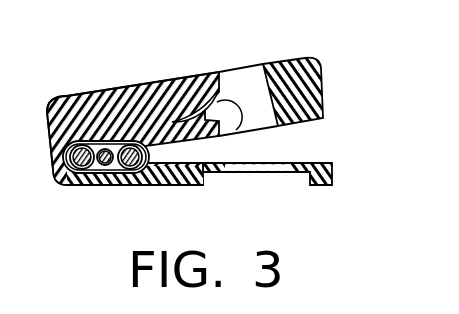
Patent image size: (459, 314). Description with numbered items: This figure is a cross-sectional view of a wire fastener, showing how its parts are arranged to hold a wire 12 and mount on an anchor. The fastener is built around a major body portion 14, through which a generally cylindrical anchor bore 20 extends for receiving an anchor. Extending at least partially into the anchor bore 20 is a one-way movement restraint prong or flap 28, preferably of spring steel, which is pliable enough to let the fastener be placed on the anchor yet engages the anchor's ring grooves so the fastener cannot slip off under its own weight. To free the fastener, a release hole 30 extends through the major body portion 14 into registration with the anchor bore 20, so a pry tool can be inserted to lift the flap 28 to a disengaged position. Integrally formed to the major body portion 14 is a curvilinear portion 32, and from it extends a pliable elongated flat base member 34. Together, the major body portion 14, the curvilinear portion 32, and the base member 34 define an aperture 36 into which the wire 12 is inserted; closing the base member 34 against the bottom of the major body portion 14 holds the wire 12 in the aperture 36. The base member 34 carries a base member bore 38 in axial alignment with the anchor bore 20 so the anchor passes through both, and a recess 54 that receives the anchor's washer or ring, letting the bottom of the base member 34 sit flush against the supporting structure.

The wire 12 is at (100, 172).
The major body portion 14 is at (156, 82).
The anchor bore 20 is at (262, 63).
The flap 28 is at (221, 97).
The release hole 30 is at (236, 130).
The curvilinear portion 32 is at (47, 107).
The base member 34 is at (193, 185).
The aperture 36 is at (96, 108).
The base member bore 38 is at (278, 175).
The recess 54 is at (251, 173).